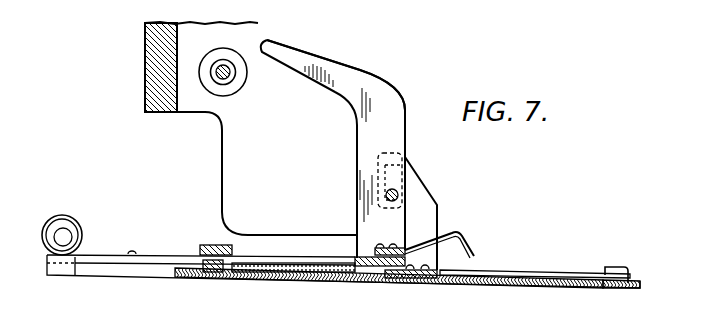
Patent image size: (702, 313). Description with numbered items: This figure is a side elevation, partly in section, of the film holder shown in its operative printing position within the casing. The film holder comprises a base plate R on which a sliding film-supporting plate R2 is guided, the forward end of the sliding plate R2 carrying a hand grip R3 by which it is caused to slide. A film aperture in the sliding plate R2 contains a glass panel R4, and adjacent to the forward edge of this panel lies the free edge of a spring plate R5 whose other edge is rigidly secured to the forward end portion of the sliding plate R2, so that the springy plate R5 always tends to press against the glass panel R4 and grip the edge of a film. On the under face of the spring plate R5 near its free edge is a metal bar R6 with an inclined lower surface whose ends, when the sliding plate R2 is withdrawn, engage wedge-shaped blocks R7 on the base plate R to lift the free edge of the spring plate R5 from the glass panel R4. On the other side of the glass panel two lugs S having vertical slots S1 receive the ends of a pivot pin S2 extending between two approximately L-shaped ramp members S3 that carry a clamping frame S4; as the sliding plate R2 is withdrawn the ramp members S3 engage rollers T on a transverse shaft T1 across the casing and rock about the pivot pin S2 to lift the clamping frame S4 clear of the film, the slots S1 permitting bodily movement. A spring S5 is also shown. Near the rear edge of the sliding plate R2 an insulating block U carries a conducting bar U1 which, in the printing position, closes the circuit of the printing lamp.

The lug S is at (425, 210).
The vertical slot S1 is at (405, 157).
The pivot pin S2 is at (398, 193).
The ramp member S3 is at (365, 82).
The clamping frame S4 is at (300, 262).
The spring S5 is at (470, 245).
The roller T is at (240, 60).
The transverse shaft T1 is at (229, 79).
The base plate R is at (430, 283).
The sliding film-supporting plate R2 is at (553, 281).
The hand grip R3 is at (75, 220).
The glass panel R4 is at (287, 268).
The spring plate R5 is at (177, 257).
The metal bar R6 is at (217, 272).
The wedge-shaped block R7 is at (67, 264).
The insulating block U is at (532, 276).
The conducting bar U1 is at (615, 267).